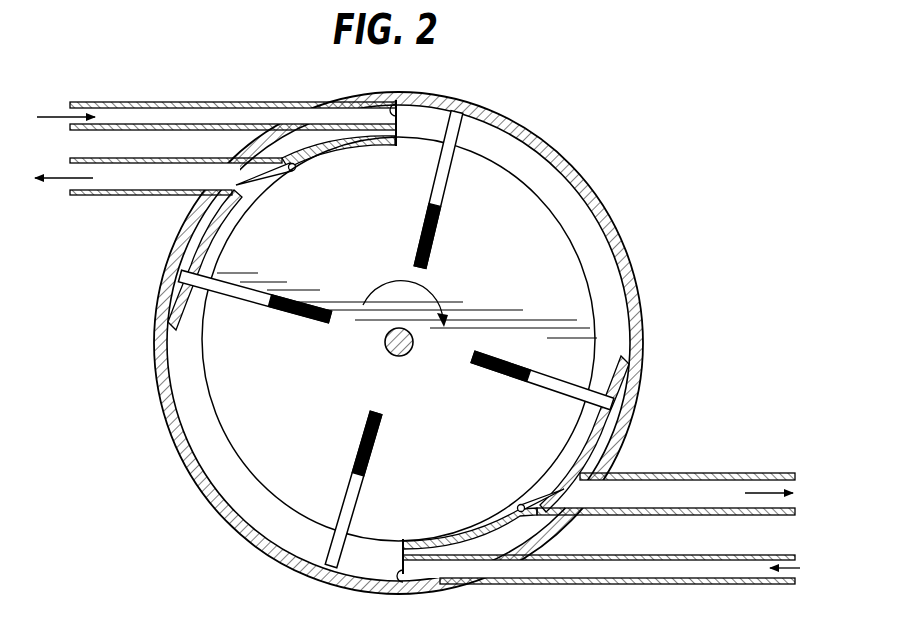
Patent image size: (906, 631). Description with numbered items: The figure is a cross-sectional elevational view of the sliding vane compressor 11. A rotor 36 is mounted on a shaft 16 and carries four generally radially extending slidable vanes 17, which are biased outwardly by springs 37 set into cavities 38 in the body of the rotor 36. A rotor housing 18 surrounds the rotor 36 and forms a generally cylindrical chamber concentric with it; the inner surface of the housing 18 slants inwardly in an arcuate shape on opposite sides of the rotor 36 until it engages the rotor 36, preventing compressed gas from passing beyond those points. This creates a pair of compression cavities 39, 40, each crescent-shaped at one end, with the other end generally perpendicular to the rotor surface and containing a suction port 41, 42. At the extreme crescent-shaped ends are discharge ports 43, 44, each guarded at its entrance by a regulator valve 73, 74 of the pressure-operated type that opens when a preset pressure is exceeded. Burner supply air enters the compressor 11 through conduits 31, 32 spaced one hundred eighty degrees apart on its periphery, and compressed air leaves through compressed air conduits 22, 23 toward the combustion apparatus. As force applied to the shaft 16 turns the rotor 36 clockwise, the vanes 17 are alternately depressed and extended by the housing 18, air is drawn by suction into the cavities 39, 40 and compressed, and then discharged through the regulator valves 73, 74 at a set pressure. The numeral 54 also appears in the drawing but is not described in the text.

The sliding vane compressor 11 is at (178, 262).
The shaft 16 is at (385, 343).
The slidable vanes 17 is at (444, 178).
The rotor housing 18 is at (207, 228).
The compressed air conduit 22 is at (71, 160).
The compressed air conduit 23 is at (626, 516).
The conduit 31 is at (238, 102).
The conduit 32 is at (641, 585).
The rotor 36 is at (560, 210).
The springs 37 is at (428, 228).
The cavities 38 is at (442, 244).
The compression cavity 39 is at (513, 157).
The compression cavity 40 is at (213, 428).
The suction port 41 is at (398, 100).
The suction port 42 is at (392, 581).
The discharge port 43 is at (556, 478).
The discharge port 44 is at (243, 193).
The member 54 is at (372, 623).
The regulator valve 73 is at (527, 487).
The regulator valve 74 is at (268, 176).